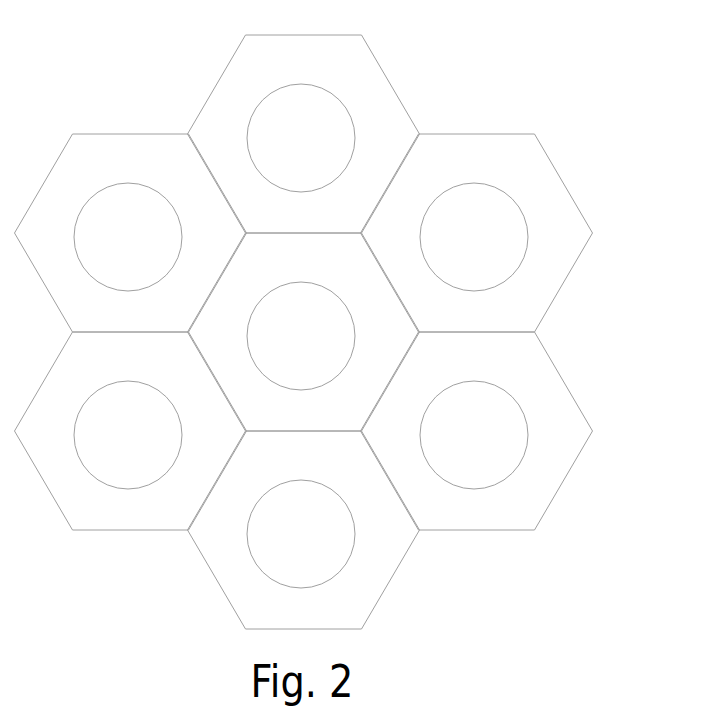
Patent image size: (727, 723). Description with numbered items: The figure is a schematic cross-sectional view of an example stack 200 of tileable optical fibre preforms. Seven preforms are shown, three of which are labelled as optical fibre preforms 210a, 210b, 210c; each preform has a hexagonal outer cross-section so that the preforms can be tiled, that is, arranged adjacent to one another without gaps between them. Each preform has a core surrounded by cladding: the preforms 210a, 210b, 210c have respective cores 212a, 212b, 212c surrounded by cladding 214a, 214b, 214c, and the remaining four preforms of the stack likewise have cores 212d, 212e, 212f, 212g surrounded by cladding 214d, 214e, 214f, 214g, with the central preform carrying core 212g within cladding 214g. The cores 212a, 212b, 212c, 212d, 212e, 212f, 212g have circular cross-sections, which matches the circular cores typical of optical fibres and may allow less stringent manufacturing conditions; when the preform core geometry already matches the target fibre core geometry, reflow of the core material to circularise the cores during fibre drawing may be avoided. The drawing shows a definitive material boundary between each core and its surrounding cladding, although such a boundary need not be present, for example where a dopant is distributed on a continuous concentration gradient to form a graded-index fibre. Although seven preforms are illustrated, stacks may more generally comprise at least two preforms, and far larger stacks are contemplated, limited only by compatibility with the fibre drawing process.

The stack 200 is at (135, 98).
The optical fibre preform 210a is at (385, 77).
The optical fibre preform 210b is at (565, 187).
The optical fibre preform 210c is at (566, 385).
The core 212a is at (332, 147).
The core 212b is at (456, 246).
The core 212c is at (456, 444).
The core 212d is at (332, 543).
The core 212e is at (110, 444).
The core 212f is at (110, 246).
The core 212g is at (332, 345).
The cladding 214a is at (284, 70).
The cladding 214b is at (506, 169).
The cladding 214c is at (506, 367).
The cladding 214d is at (284, 466).
The cladding 214e is at (160, 367).
The cladding 214f is at (160, 169).
The cladding 214g is at (284, 268).